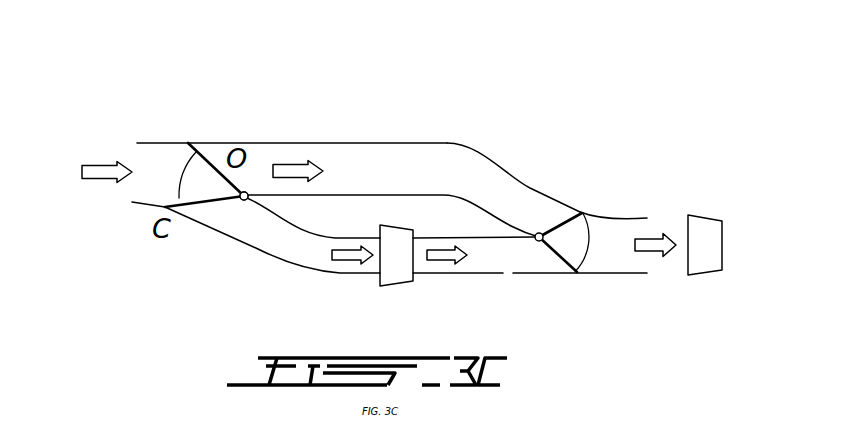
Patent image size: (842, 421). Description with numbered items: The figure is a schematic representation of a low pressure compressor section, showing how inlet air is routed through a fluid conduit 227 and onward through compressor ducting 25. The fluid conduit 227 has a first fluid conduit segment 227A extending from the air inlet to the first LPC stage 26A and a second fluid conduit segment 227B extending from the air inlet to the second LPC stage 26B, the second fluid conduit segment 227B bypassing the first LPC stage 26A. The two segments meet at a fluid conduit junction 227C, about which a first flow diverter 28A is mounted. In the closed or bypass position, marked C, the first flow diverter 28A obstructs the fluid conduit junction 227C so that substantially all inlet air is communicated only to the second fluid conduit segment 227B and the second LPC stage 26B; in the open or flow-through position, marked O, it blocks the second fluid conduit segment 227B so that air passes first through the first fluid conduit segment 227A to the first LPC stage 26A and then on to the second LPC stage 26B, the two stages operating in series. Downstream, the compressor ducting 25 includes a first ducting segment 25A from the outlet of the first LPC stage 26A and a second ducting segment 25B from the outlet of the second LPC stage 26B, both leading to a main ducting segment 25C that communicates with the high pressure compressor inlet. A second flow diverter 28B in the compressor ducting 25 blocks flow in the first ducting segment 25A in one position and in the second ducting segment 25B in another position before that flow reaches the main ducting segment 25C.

The compressor ducting 25 is at (495, 148).
The first ducting segment 25A is at (497, 273).
The second ducting segment 25B is at (462, 143).
The main ducting segment 25C is at (623, 215).
The first LPC stage 26A is at (405, 265).
The second LPC stage 26B is at (705, 232).
The first flow diverter 28A is at (207, 157).
The second flow diverter 28B is at (554, 222).
The fluid conduit 227 is at (232, 143).
The first fluid conduit segment 227A is at (280, 257).
The second fluid conduit segment 227B is at (343, 143).
The fluid conduit junction 227C is at (241, 207).